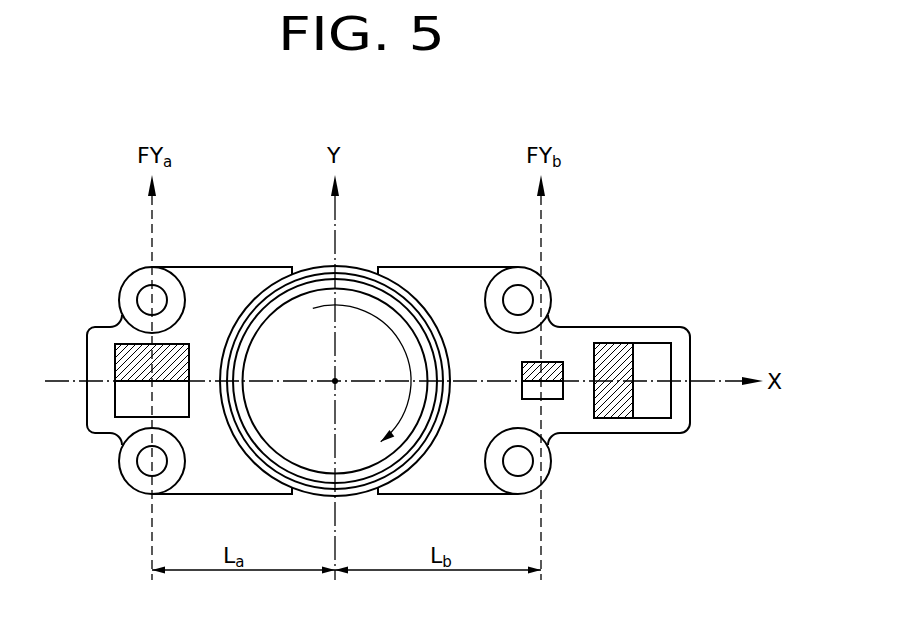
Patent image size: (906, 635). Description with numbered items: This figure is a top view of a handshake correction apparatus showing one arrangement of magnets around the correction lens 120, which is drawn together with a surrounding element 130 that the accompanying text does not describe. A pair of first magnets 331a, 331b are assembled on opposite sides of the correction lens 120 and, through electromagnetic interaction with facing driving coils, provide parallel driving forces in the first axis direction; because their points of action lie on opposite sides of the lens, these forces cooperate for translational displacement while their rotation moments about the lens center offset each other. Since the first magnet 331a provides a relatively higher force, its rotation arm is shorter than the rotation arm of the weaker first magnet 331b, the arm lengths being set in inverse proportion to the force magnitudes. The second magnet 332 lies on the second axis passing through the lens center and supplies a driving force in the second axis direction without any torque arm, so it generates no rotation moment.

The correction lens 120 is at (357, 322).
The lens holder 130 is at (452, 289).
The first magnet 331a is at (127, 408).
The first magnet 331b is at (550, 400).
The second magnet 332 is at (652, 405).